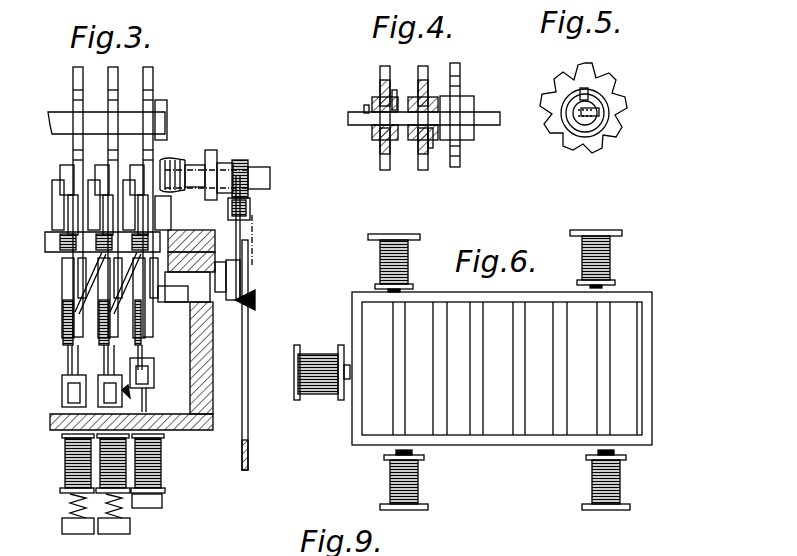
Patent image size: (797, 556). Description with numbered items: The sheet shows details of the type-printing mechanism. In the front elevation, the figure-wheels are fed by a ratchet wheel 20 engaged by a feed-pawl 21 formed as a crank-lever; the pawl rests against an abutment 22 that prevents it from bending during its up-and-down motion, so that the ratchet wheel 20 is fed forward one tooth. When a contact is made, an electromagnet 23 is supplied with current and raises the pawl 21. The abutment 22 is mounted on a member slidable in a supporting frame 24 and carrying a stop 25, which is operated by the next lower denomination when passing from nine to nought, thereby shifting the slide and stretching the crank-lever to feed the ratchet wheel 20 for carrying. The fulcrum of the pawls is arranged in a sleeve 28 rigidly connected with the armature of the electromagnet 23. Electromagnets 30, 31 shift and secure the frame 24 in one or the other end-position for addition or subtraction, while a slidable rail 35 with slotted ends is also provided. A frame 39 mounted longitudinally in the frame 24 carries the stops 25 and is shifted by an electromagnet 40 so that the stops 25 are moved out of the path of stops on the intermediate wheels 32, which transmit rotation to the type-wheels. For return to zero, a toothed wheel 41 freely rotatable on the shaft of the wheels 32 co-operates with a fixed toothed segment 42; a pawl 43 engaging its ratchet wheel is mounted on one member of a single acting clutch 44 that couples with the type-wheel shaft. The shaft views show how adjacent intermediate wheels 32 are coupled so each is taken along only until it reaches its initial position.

In FIG. 3, the ratchet wheel 20 is at (65, 278).
In FIG. 3, the feed-pawl 21 is at (67, 360).
In FIG. 3, the abutment 22 is at (63, 325).
In FIG. 3, the electromagnet 23 is at (160, 458).
In FIG. 3, the supporting frame 24 is at (58, 252).
In FIG. 6, the supporting frame 24 is at (644, 360).
In FIG. 3, the stop 25 is at (62, 190).
In FIG. 3, the sleeve 28 is at (150, 375).
In FIG. 6, the electromagnet 30 is at (378, 265).
In FIG. 6, the electromagnet 31 is at (420, 478).
In FIG. 3, the intermediate wheel 32 is at (72, 150).
In FIG. 4, the intermediate wheel 32 is at (462, 72).
In FIG. 5, the intermediate wheel 32 is at (560, 69).
In FIG. 3, the rail 35 is at (243, 456).
In FIG. 6, the frame 39 is at (362, 424).
In FIG. 3, the electromagnet 40 is at (255, 240).
In FIG. 6, the electromagnet 40 is at (330, 345).
In FIG. 3, the toothed wheel 41 is at (250, 172).
In FIG. 3, the toothed segment 42 is at (250, 208).
In FIG. 3, the pawl 43 is at (210, 150).
In FIG. 3, the single acting clutch 44 is at (183, 170).